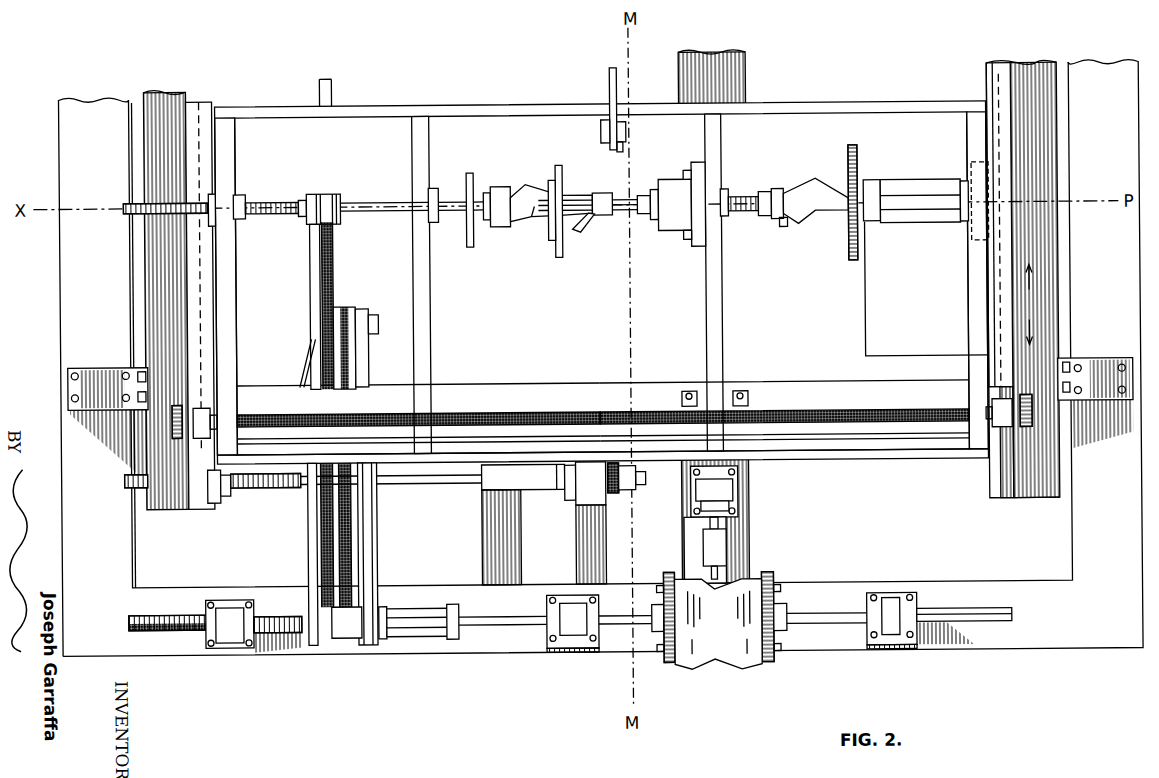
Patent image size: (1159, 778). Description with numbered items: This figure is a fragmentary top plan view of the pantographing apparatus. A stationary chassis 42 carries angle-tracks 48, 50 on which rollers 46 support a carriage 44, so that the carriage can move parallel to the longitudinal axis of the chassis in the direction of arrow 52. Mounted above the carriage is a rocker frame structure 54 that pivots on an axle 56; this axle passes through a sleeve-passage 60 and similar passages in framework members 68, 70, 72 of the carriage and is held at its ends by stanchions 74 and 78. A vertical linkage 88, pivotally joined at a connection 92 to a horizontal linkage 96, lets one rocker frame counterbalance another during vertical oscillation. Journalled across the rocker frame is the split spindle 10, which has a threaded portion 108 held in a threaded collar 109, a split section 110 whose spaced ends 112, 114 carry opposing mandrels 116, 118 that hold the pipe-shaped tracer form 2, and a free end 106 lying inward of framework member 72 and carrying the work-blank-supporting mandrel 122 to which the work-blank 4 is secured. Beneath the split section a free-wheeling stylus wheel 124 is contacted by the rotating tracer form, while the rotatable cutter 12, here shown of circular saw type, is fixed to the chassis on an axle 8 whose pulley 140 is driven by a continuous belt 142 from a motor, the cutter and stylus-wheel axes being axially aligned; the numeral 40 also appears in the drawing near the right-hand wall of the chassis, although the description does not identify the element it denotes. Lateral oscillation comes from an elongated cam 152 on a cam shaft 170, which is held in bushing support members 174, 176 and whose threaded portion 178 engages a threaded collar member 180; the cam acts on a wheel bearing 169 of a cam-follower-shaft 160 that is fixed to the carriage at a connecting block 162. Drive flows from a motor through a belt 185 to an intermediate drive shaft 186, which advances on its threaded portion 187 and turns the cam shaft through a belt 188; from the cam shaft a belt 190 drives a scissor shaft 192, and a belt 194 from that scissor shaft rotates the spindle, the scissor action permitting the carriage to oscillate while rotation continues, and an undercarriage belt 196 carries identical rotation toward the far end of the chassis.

The tracer form 2 is at (532, 177).
The work-blank 4 is at (827, 178).
The axle 8 is at (897, 198).
The spindle 10 is at (362, 198).
The rotatable cutter 12 is at (860, 174).
The frame 40 is at (1143, 66).
The stationary chassis 42 is at (74, 297).
The carriage 44 is at (810, 433).
The rollers 46 is at (178, 404).
The angle-track 48 is at (162, 309).
The angle-track 50 is at (1016, 503).
The arrow 52 is at (1035, 298).
The rocker frame structure 54 is at (880, 454).
The axle 56 is at (478, 422).
The sleeve-passage 60 is at (238, 328).
The framework member 68 is at (428, 364).
The framework member 70 is at (728, 350).
The framework member 72 is at (972, 403).
The stanchion 74 is at (212, 420).
The stanchion 78 is at (1007, 430).
The vertical linkage 88 is at (625, 146).
The pivotal connection 92 is at (630, 130).
The horizontal linkage 96 is at (612, 96).
The free end 106 is at (760, 222).
The threaded portion 108 is at (128, 202).
The threaded collar 109 is at (243, 200).
The split section 110 is at (540, 229).
The end 112 is at (617, 197).
The end 114 is at (476, 190).
The mandrel 116 is at (601, 217).
The mandrel 118 is at (498, 227).
The work-blank-supporting mandrel 122 is at (775, 197).
The stylus wheel 124 is at (559, 254).
The pulley 140 is at (1003, 182).
The continuous belt 142 is at (982, 162).
The cam 152 is at (736, 662).
The cam-follower-shaft 160 is at (712, 92).
The connecting block 162 is at (682, 400).
The wheel bearing 169 is at (737, 560).
The cam shaft 170 is at (473, 624).
The bushing support member 174 is at (568, 649).
The bushing support member 176 is at (884, 640).
The threaded portion 178 is at (158, 624).
The threaded collar member 180 is at (247, 630).
The belt 185 is at (620, 490).
The intermediate drive shaft 186 is at (400, 485).
The threaded portion 187 is at (137, 484).
The belt 188 is at (328, 637).
The belt 190 is at (347, 302).
The scissor shaft 192 is at (378, 328).
The belt 194 is at (334, 262).
The belt 196 is at (307, 526).